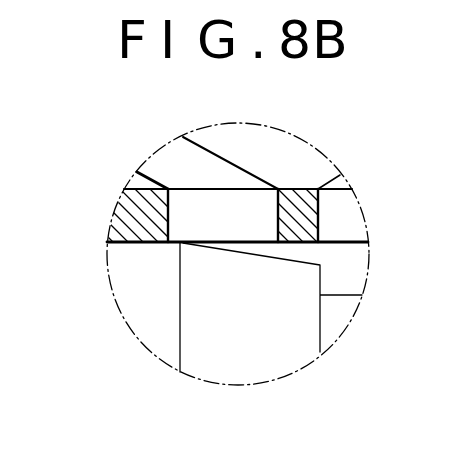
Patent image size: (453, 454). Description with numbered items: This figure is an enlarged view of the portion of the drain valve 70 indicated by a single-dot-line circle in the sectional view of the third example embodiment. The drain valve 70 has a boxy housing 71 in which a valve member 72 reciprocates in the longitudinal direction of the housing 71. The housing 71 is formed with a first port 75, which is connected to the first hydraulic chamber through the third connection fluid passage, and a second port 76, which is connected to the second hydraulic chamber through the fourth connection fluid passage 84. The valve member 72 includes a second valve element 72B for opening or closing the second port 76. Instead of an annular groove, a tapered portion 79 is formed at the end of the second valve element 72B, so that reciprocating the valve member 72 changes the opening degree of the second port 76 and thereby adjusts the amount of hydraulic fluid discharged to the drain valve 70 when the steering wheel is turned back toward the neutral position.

The drain valve 70 is at (130, 180).
The housing 71 is at (112, 223).
The valve member 72 is at (238, 370).
The second valve element 72B is at (148, 325).
The first port 75 is at (348, 218).
The second port 76 is at (277, 210).
The tapered portion 79 is at (305, 262).
The fourth connection fluid passage 84 is at (203, 160).